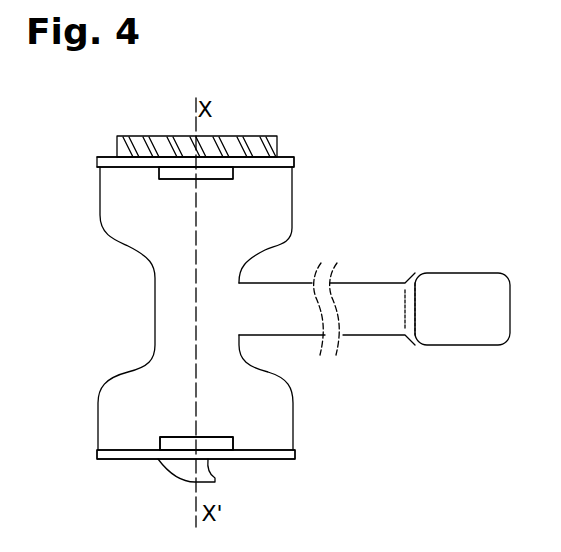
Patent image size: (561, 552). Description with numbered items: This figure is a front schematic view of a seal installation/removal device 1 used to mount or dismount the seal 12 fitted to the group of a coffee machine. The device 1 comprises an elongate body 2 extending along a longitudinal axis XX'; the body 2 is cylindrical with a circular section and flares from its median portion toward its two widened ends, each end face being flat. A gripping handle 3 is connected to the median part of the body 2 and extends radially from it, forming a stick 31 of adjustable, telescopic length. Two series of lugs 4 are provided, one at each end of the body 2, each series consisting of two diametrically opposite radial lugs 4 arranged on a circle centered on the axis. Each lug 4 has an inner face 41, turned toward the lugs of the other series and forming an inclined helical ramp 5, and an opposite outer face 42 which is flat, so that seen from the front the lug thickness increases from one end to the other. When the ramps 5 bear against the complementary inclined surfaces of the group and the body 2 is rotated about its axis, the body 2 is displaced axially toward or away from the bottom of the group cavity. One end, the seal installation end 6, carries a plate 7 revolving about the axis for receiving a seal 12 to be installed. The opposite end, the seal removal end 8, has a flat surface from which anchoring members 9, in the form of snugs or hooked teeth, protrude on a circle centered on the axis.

The seal installation/removal device 1 is at (260, 308).
The elongate body 2 is at (270, 393).
The gripping handle 3 is at (357, 302).
The stick 31 is at (447, 300).
The lugs 4 is at (173, 179).
The inclined ramps 5 is at (218, 179).
The seal installation end 6 is at (286, 158).
The plate 7 is at (194, 117).
The seal removal end 8 is at (122, 459).
The anchoring members 9 is at (188, 468).
The seal 12 is at (157, 142).
The inner face 41 is at (220, 437).
The outer face 42 is at (223, 459).